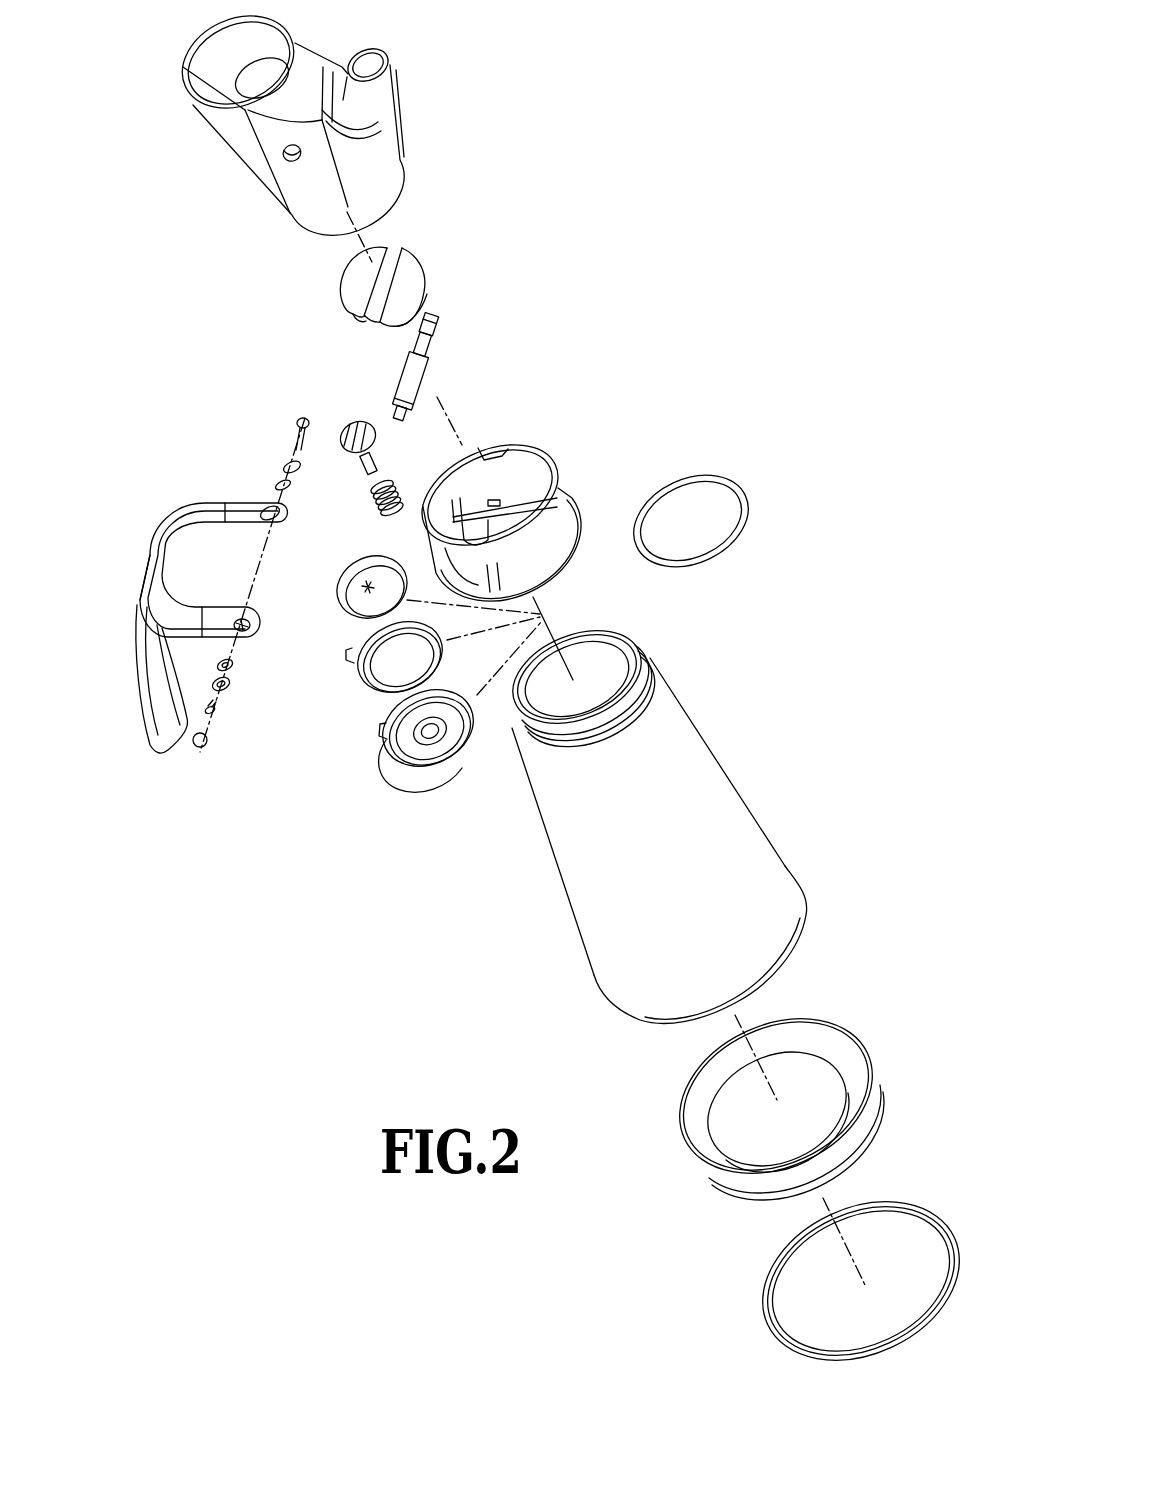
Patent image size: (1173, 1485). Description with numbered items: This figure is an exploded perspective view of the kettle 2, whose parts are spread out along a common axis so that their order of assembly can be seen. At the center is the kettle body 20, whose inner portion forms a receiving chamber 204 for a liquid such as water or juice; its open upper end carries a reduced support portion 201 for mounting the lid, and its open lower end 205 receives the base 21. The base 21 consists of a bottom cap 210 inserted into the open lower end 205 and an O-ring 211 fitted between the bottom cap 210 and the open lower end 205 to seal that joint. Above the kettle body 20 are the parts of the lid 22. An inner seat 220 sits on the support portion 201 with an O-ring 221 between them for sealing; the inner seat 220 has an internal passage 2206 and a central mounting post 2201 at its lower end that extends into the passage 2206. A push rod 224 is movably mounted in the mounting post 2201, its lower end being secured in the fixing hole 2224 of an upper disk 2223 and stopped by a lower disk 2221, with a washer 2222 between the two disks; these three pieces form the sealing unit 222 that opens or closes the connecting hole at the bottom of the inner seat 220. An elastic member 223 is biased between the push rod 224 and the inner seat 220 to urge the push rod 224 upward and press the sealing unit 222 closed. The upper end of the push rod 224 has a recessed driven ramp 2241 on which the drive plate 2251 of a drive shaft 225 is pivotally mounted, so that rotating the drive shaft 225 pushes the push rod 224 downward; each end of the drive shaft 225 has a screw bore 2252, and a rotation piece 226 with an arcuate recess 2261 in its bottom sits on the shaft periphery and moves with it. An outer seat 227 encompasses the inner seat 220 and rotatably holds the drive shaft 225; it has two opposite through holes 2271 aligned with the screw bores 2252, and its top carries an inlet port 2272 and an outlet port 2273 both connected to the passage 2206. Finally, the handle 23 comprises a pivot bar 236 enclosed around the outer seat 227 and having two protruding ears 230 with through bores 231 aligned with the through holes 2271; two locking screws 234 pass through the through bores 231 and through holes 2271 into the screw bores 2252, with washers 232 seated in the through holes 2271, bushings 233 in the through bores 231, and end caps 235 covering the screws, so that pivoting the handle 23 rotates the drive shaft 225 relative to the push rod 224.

The kettle 2 is at (806, 437).
The kettle body 20 is at (703, 762).
The support portion 201 is at (575, 683).
The receiving chamber 204 is at (606, 669).
The open lower end 205 is at (774, 887).
The base 21 is at (723, 1330).
The bottom cap 210 is at (838, 1040).
The O-ring 211 is at (898, 1207).
The lid 22 is at (501, 59).
The inner seat 220 is at (566, 504).
The mounting post 2201 is at (494, 503).
The passage 2206 is at (516, 489).
The O-ring 221 is at (746, 517).
The sealing unit 222 is at (372, 752).
The lower disk 2221 is at (430, 762).
The washer 2222 is at (383, 737).
The upper disk 2223 is at (340, 577).
The fixing hole 2224 is at (365, 583).
The elastic member 223 is at (376, 500).
The push rod 224 is at (366, 455).
The driven ramp 2241 is at (356, 423).
The drive shaft 225 is at (428, 340).
The drive plate 2251 is at (430, 375).
The screw bore 2252 is at (397, 420).
The rotation piece 226 is at (408, 277).
The arcuate recess 2261 is at (365, 322).
The outer seat 227 is at (390, 147).
The through hole 2271 is at (290, 158).
The inlet port 2272 is at (215, 97).
The outlet port 2273 is at (372, 62).
The handle 23 is at (181, 507).
The protruding ear 230 is at (260, 505).
The through bore 231 is at (245, 630).
The washer 232 is at (226, 668).
The bushing 233 is at (222, 688).
The locking screw 234 is at (211, 714).
The end cap 235 is at (200, 747).
The pivot bar 236 is at (158, 569).